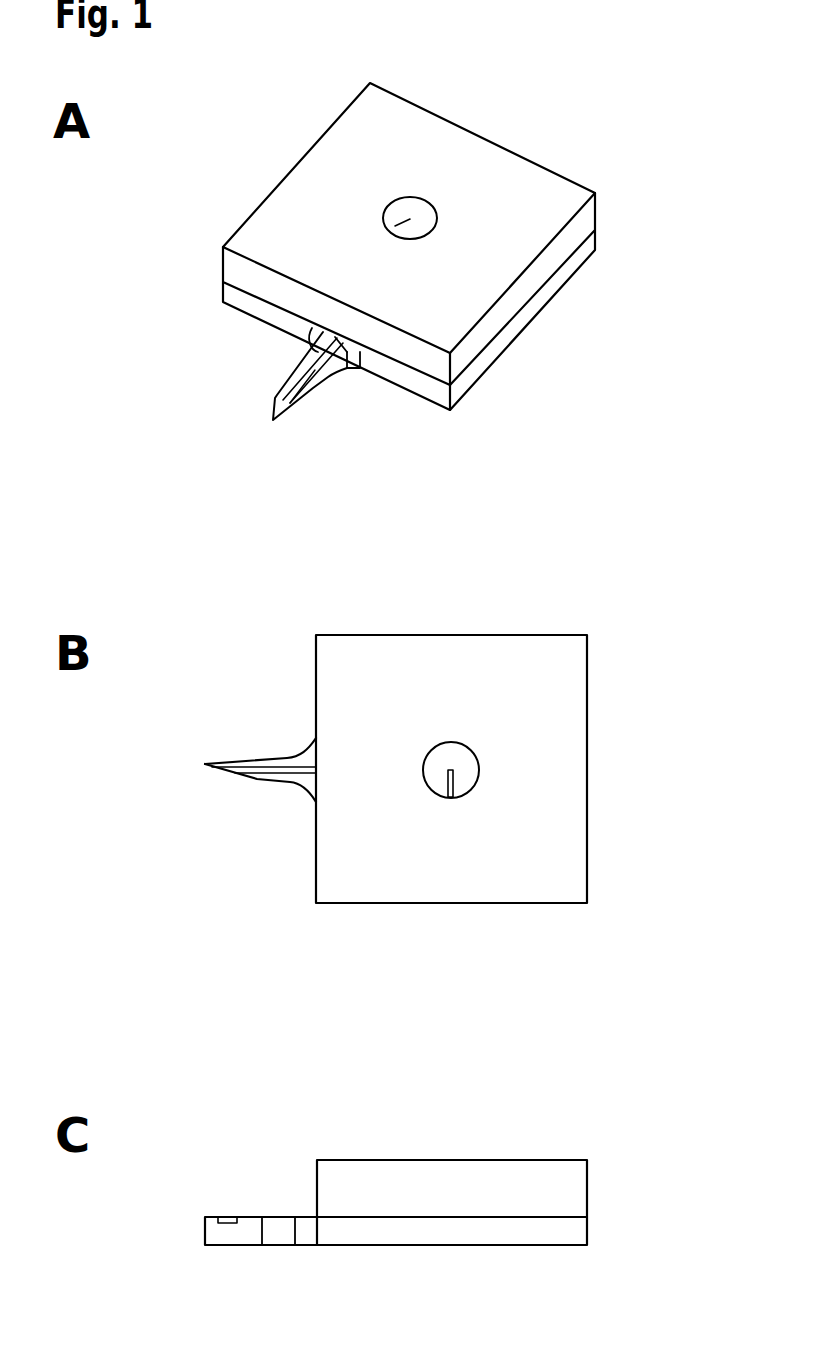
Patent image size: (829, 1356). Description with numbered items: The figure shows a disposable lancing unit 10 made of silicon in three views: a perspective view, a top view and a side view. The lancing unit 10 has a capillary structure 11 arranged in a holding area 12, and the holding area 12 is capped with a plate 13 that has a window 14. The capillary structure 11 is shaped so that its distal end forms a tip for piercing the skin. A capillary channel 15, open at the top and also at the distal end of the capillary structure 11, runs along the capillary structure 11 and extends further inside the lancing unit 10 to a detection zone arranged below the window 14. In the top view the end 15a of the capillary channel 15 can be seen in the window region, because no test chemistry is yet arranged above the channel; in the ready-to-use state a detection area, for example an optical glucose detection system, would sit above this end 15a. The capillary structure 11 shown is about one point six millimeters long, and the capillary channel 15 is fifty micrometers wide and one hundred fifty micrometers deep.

The lancing unit 10 is at (462, 254).
The capillary structure 11 is at (318, 393).
The holding area 12 is at (575, 263).
The plate 13 is at (587, 220).
The window 14 is at (407, 220).
The capillary channel 15 is at (313, 352).
The end of the capillary channel 15a is at (457, 782).